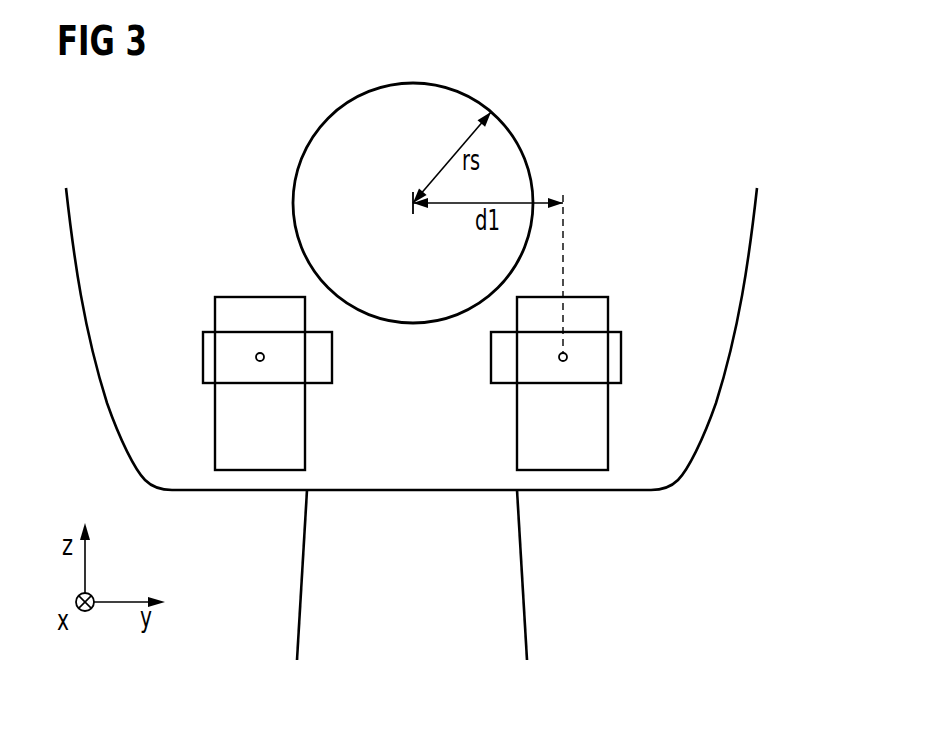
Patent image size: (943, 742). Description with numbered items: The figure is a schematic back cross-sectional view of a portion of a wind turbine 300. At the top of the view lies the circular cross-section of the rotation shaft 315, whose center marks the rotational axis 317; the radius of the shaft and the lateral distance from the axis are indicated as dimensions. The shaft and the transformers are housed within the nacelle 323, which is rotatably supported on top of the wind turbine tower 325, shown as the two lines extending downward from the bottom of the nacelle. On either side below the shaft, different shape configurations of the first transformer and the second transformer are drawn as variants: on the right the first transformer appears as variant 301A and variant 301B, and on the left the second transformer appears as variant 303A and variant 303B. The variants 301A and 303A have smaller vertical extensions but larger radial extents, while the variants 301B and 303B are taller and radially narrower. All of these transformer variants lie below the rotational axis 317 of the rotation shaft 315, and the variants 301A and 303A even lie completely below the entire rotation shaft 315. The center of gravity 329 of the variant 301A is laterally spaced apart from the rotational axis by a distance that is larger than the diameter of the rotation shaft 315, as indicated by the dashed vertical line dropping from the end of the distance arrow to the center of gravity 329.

The wind turbine 300 is at (682, 77).
The rotation shaft 315 is at (413, 83).
The rotational axis 317 is at (408, 204).
The nacelle 323 is at (746, 315).
The wind turbine tower 325 is at (303, 582).
The variant of first transformer 301A is at (612, 357).
The variant of first transformer 301B is at (600, 427).
The variant of second transformer 303A is at (211, 357).
The variant of second transformer 303B is at (222, 427).
The center of gravity 329 is at (558, 357).